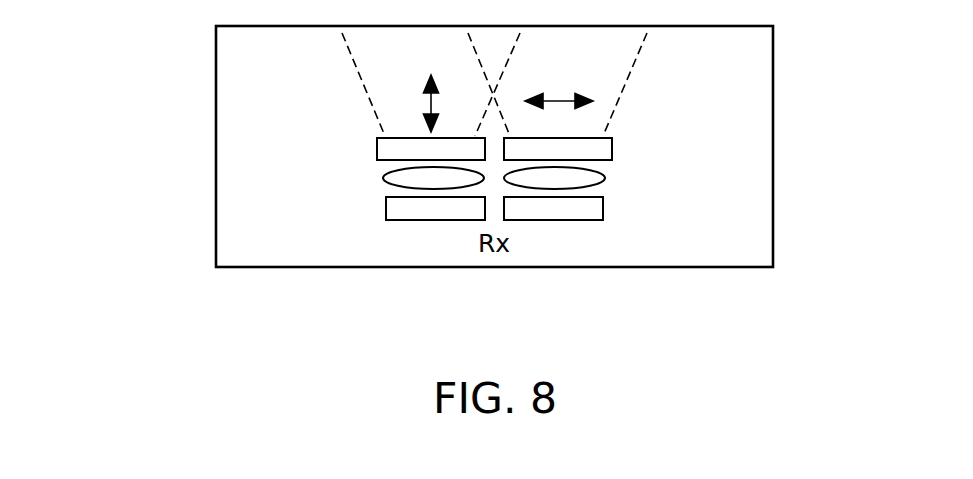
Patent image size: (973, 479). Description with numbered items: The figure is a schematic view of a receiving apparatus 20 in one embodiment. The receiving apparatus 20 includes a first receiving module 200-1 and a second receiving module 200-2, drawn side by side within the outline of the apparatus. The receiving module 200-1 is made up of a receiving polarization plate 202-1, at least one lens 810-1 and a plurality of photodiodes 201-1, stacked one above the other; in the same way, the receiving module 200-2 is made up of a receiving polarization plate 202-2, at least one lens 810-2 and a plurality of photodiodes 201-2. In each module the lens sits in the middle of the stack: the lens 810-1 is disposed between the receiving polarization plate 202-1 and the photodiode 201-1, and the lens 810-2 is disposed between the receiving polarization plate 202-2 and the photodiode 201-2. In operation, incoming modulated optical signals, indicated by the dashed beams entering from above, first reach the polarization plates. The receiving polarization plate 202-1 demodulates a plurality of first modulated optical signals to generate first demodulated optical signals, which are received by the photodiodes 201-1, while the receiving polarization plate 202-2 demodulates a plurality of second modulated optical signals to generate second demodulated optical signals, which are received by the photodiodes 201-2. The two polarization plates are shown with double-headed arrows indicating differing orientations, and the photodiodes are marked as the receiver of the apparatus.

The receiving apparatus 20 is at (773, 59).
The receiving module 200-1 is at (107, 112).
The receiving module 200-2 is at (879, 112).
The receiving polarization plate 202-1 is at (377, 148).
The receiving polarization plate 202-2 is at (612, 148).
The lens 810-1 is at (383, 178).
The lens 810-2 is at (605, 178).
The photodiodes 201-1 is at (386, 208).
The photodiodes 201-2 is at (603, 208).